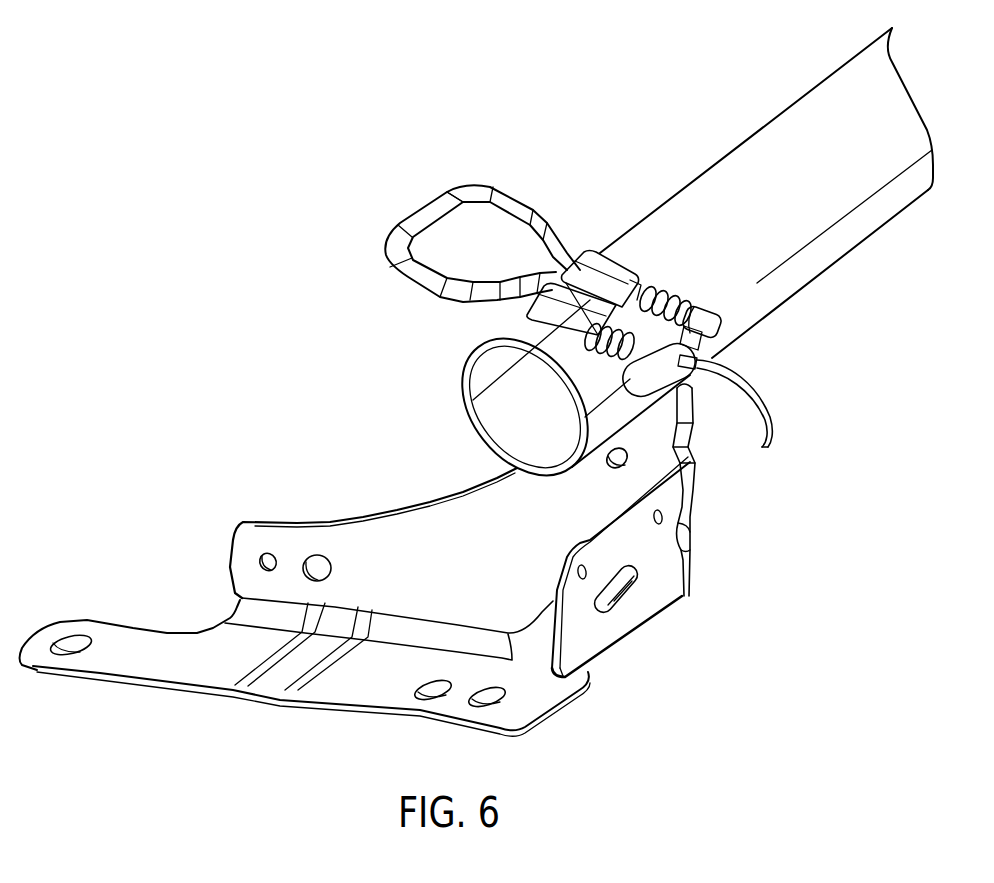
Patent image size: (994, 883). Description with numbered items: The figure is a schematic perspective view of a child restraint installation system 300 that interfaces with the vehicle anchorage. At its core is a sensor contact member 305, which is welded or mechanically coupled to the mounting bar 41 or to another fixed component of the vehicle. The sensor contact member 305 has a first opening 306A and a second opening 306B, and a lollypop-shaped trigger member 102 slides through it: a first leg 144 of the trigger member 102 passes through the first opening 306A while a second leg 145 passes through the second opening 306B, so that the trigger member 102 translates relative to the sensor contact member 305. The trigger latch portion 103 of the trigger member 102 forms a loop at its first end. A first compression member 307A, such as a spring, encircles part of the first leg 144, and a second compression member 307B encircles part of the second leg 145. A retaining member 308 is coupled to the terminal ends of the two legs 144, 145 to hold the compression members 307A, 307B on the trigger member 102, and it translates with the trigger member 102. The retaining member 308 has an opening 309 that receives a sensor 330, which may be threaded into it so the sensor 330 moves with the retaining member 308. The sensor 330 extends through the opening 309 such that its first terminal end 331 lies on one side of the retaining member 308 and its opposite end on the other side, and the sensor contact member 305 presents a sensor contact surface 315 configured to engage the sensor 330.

The mounting bar 41 is at (791, 128).
The trigger member 102 is at (376, 294).
The trigger latch portion 103 is at (420, 232).
The first leg 144 is at (526, 303).
The second leg 145 is at (580, 258).
The child restraint installation system 300 is at (618, 128).
The sensor contact member 305 is at (607, 296).
The first opening 306A is at (560, 336).
The second opening 306B is at (645, 268).
The first compression member 307A is at (690, 468).
The second compression member 307B is at (700, 318).
The retaining member 308 is at (710, 343).
The opening 309 is at (697, 362).
The sensor contact surface 315 is at (434, 216).
The sensor 330 is at (692, 378).
The first terminal end 331 is at (672, 288).